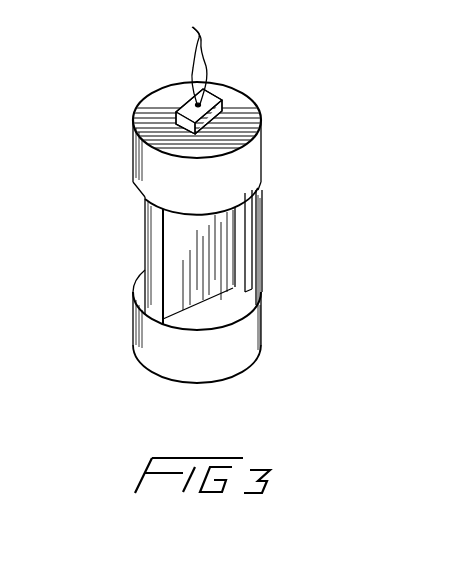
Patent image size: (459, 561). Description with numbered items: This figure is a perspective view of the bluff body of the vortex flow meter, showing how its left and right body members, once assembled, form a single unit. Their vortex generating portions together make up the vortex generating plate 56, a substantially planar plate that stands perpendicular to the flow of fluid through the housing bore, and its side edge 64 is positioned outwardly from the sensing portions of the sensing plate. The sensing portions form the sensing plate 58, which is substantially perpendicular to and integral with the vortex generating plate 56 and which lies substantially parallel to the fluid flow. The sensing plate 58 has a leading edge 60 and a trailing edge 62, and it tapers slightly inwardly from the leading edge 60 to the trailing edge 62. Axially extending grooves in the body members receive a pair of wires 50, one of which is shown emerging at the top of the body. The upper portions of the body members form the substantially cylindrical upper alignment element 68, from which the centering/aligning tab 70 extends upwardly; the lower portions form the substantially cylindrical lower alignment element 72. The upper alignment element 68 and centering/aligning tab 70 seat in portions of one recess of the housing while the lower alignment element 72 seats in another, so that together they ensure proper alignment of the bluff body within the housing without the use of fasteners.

The wires 50 is at (198, 56).
The vortex generating plate 56 is at (268, 233).
The sensing plate 58 is at (130, 266).
The leading edge 60 is at (230, 253).
The trailing edge 62 is at (170, 273).
The side edge 64 is at (258, 210).
The upper alignment element 68 is at (126, 147).
The centering/aligning tab 70 is at (222, 98).
The lower alignment element 72 is at (128, 363).